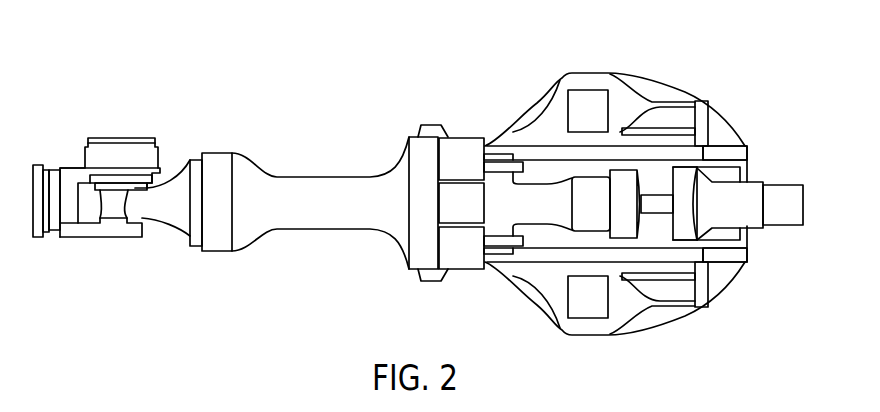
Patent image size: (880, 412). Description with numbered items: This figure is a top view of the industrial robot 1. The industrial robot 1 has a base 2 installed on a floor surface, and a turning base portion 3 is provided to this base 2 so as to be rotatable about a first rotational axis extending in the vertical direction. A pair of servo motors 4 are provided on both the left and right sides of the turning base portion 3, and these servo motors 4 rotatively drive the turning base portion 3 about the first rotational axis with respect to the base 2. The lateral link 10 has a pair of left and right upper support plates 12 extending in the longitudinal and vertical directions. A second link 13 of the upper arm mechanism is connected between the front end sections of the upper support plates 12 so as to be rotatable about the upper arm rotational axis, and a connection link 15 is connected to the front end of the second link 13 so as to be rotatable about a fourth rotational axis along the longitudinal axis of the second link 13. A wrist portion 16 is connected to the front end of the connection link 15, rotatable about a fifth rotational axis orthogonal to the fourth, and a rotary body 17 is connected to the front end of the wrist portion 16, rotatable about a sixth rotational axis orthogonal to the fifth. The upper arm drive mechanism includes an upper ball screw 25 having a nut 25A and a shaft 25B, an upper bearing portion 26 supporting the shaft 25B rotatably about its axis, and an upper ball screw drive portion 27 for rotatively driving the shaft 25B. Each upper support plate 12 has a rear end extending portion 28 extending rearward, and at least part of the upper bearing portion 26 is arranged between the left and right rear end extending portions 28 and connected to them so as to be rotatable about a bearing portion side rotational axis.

The industrial robot 1 is at (365, 90).
The base 2 is at (720, 275).
The turning base portion 3 is at (653, 297).
The servo motors 4 is at (574, 100).
The lateral link 10 is at (626, 196).
The upper support plates 12 is at (650, 155).
The second link 13 is at (330, 220).
The connection link 15 is at (177, 217).
The wrist portion 16 is at (93, 233).
The rotary body 17 is at (38, 237).
The upper ball screw 25 is at (731, 122).
The nut 25A is at (632, 192).
The shaft 25B is at (653, 203).
The upper bearing portion 26 is at (747, 190).
The upper ball screw drive portion 27 is at (787, 192).
The rear end extending portion 28 is at (733, 152).